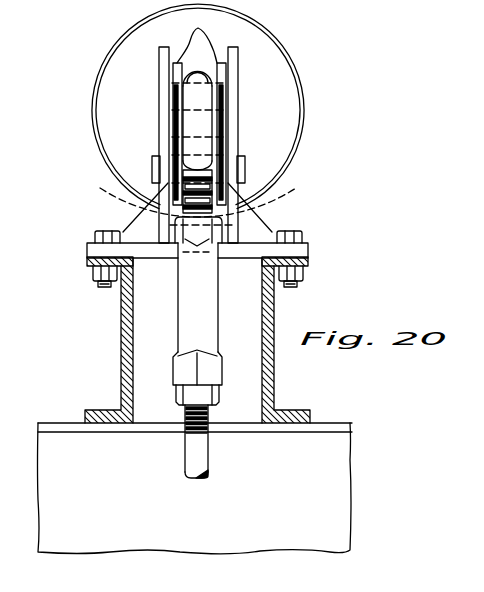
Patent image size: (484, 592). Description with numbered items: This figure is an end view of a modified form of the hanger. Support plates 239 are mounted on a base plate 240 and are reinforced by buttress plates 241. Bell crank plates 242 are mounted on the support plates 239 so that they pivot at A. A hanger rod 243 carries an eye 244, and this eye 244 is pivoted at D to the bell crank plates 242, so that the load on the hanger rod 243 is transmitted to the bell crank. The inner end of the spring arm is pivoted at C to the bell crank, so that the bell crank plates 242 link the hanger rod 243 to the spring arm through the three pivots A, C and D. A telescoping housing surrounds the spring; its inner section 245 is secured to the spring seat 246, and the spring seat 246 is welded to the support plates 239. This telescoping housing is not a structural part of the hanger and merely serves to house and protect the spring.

The support plates 239 is at (157, 188).
The base plate 240 is at (309, 250).
The buttress plates 241 is at (127, 224).
The bell crank plates 242 is at (188, 42).
The hanger rod 243 is at (211, 457).
The eye 244 is at (165, 122).
The inner section of telescoping housing 245 is at (291, 53).
The spring seat 246 is at (288, 83).
The pivot of bell crank plates on support plates A is at (244, 169).
The pivot of spring arm inner end to bell crank C is at (227, 102).
The pivot of eye to bell crank D is at (229, 124).